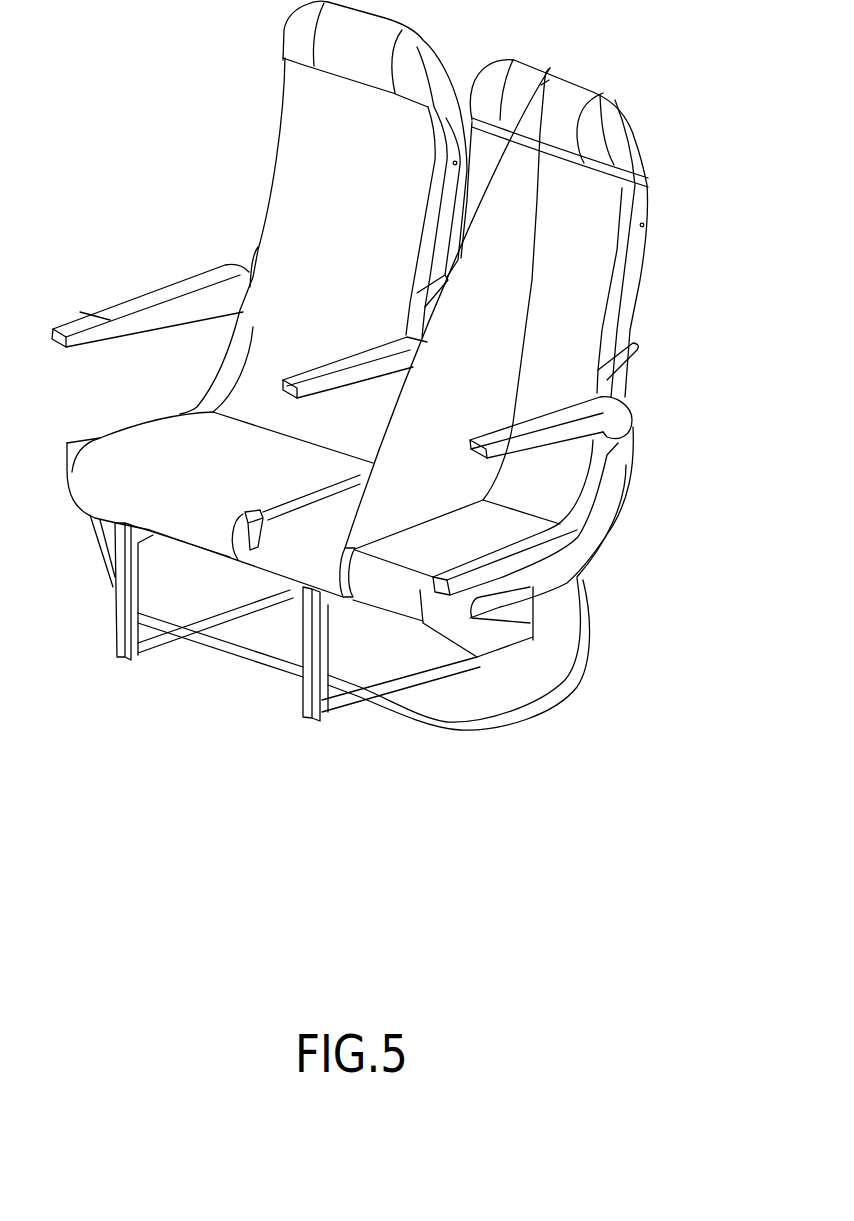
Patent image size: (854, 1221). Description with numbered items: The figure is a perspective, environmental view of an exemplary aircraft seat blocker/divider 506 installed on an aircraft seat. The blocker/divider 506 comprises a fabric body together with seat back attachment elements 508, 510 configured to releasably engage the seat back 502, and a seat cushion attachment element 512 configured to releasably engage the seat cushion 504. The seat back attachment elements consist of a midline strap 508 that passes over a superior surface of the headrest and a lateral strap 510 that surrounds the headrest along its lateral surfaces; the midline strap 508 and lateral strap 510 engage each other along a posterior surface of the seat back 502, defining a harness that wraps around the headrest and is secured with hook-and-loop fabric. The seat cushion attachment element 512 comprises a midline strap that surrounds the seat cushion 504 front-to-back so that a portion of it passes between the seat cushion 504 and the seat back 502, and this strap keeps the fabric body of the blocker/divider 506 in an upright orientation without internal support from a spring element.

The seat back 502 is at (593, 313).
The seat cushion 504 is at (400, 588).
The aircraft seat blocker/divider 506 is at (493, 297).
The midline strap 508 is at (550, 65).
The lateral strap 510 is at (650, 180).
The seat cushion attachment element 512 is at (302, 573).